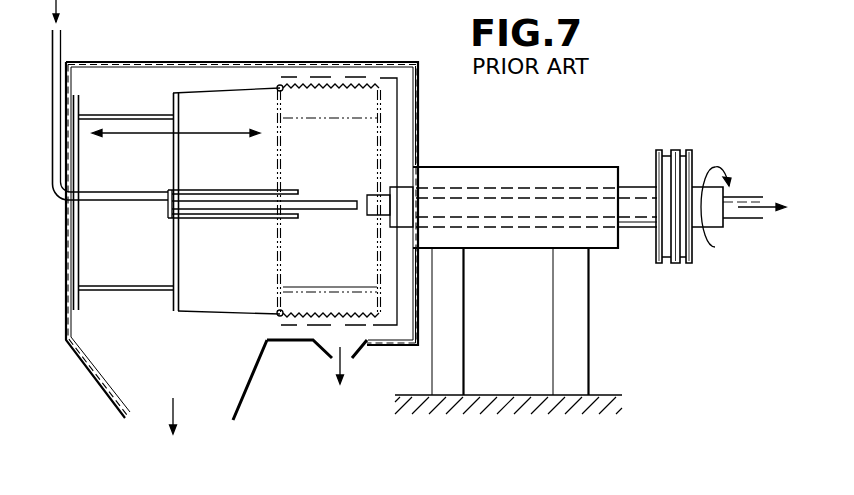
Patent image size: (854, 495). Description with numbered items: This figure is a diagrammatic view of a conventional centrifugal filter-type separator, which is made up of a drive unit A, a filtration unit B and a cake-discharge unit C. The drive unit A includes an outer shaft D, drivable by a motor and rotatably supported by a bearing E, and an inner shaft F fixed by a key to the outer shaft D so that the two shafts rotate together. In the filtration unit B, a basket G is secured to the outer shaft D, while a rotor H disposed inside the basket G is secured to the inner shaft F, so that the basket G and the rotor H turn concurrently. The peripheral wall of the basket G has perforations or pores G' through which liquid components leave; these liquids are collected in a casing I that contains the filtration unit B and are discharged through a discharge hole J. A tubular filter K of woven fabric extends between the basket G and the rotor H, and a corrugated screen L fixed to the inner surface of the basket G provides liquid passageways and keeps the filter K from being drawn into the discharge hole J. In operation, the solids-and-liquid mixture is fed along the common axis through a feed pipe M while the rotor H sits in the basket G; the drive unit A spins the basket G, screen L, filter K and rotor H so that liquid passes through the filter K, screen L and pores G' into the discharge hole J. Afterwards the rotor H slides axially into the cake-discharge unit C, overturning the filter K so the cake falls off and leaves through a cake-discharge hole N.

The drive unit A is at (541, 166).
The filtration unit B is at (360, 56).
The cake-discharge unit C is at (185, 60).
The outer shaft D is at (636, 186).
The bearing E is at (517, 248).
The inner shaft F is at (640, 212).
The basket G is at (331, 171).
The perforations or pores G' is at (355, 206).
The rotor H is at (173, 248).
The casing I is at (418, 112).
The discharge hole J is at (333, 364).
The filter K is at (328, 310).
The screen L is at (302, 80).
The feed pipe M is at (62, 45).
The cake-discharge hole N is at (208, 422).